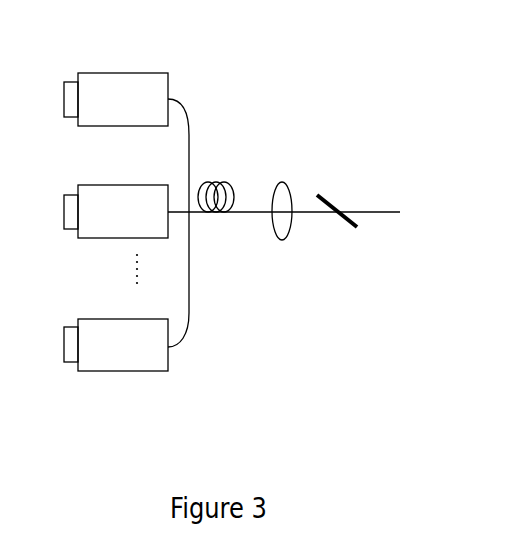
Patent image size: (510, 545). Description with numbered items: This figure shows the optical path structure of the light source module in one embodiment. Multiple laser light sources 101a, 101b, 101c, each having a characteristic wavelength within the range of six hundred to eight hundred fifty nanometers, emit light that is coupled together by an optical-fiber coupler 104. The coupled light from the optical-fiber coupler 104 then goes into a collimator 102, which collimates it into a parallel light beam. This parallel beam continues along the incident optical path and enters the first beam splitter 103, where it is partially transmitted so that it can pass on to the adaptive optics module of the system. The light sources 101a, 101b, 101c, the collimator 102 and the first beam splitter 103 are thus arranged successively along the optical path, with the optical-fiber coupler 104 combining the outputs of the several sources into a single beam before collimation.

The light source 101a is at (122, 72).
The light source 101b is at (122, 183).
The light source 101c is at (122, 317).
The collimator 102 is at (285, 242).
The first beam splitter 103 is at (342, 207).
The optical-fiber coupler 104 is at (212, 177).